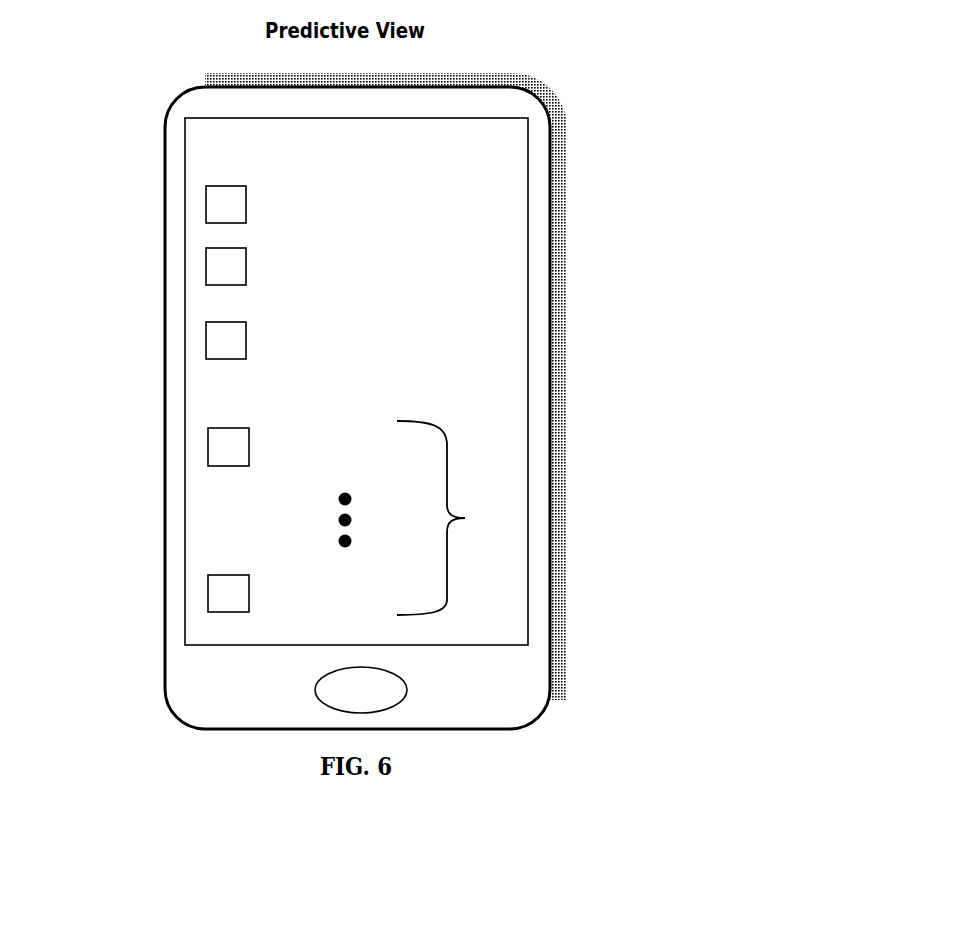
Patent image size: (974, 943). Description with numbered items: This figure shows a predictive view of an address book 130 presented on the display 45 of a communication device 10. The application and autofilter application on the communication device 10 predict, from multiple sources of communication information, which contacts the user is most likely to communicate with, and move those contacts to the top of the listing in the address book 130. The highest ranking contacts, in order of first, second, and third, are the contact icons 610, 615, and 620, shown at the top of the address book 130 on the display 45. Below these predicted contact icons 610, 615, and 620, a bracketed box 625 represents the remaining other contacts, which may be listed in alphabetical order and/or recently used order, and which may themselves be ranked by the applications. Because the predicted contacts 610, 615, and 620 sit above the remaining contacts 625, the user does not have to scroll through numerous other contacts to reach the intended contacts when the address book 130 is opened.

The communication device 10 is at (612, 131).
The display 45 is at (510, 348).
The address book 130 is at (447, 152).
The contact icon 610 is at (213, 200).
The contact icon 615 is at (213, 269).
The contact icon 620 is at (213, 340).
The remaining contacts box 625 is at (462, 518).